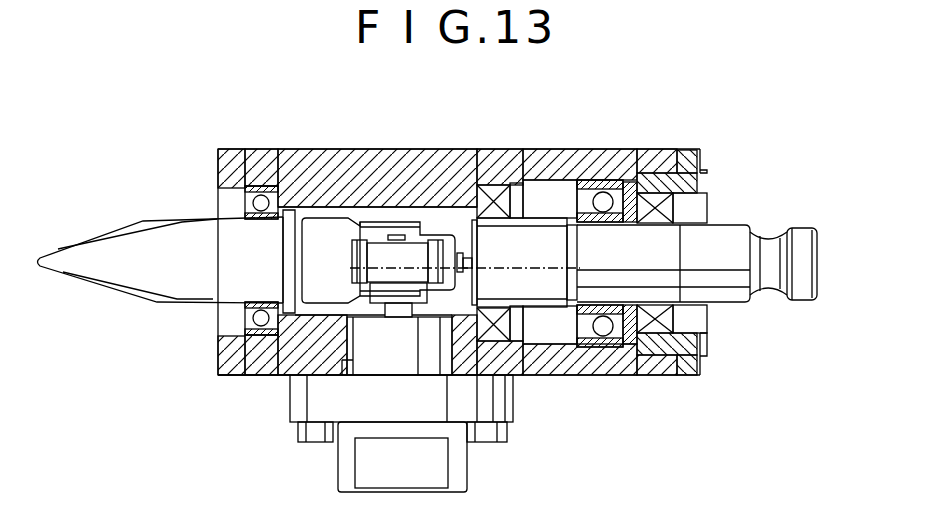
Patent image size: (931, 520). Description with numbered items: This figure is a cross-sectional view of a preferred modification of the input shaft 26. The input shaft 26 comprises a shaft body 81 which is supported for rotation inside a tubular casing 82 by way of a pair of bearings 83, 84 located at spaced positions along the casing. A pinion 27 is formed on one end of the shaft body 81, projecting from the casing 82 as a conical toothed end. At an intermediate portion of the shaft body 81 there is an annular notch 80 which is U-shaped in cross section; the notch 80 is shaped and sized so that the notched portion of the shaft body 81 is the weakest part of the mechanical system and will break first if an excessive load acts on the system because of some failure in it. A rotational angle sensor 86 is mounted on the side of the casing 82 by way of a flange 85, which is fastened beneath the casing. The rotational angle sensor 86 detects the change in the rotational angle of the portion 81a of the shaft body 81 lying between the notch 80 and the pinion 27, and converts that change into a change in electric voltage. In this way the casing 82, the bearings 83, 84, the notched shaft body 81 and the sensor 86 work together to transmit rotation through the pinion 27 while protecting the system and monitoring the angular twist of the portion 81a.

The input shaft 26 is at (530, 136).
The pinion 27 is at (139, 299).
The annular notch 80 is at (460, 221).
The shaft body 81 is at (727, 221).
The portion of the shaft body 81a is at (338, 212).
The tubular casing 82 is at (258, 378).
The bearing 83 is at (262, 186).
The bearing 84 is at (600, 180).
The flange 85 is at (513, 398).
The rotational angle sensor 86 is at (467, 468).